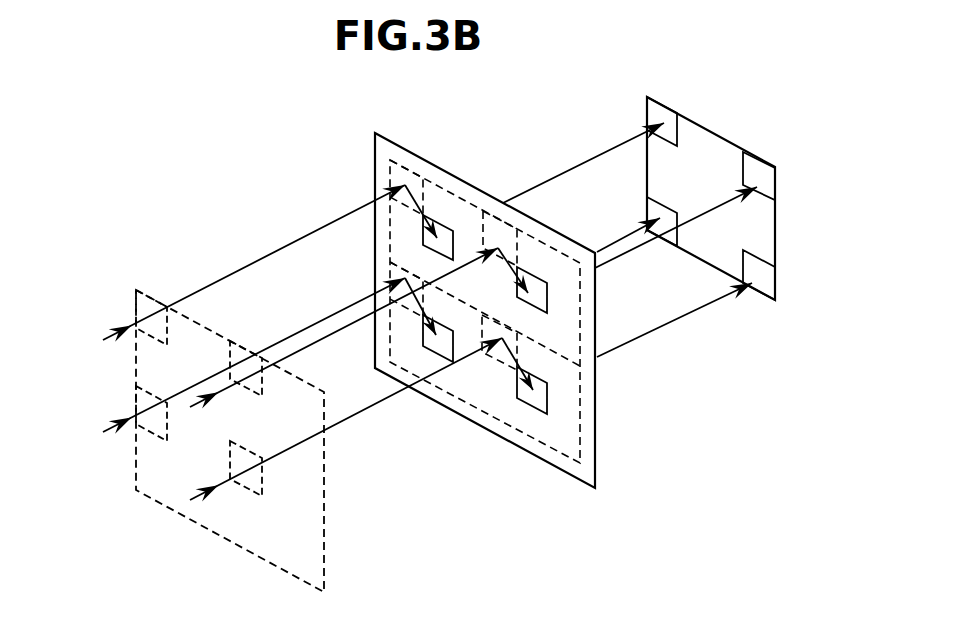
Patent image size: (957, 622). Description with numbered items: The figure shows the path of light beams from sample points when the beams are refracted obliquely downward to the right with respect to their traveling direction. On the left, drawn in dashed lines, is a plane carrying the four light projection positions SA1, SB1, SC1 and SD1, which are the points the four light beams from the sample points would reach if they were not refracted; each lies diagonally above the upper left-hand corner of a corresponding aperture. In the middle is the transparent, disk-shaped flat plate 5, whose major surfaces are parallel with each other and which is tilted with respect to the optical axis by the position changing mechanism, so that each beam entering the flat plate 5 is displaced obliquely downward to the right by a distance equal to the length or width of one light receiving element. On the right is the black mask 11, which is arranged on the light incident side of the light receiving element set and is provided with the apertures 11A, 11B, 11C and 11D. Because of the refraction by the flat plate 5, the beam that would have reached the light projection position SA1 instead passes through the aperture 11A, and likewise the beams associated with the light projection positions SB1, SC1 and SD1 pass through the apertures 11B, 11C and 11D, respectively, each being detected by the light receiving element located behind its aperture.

The flat plate 5 is at (444, 168).
The black mask 11 is at (777, 232).
The aperture 11A is at (660, 112).
The aperture 11B is at (753, 167).
The aperture 11C is at (647, 208).
The aperture 11D is at (770, 282).
The light projection position SA1 is at (150, 297).
The light projection position SB1 is at (243, 348).
The light projection position SC1 is at (136, 404).
The light projection position SD1 is at (258, 480).